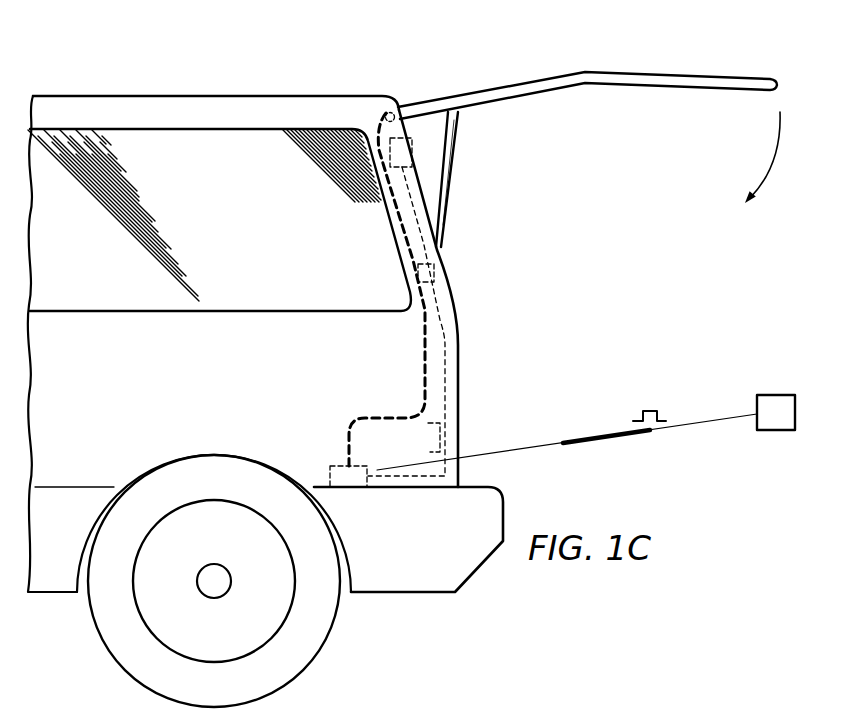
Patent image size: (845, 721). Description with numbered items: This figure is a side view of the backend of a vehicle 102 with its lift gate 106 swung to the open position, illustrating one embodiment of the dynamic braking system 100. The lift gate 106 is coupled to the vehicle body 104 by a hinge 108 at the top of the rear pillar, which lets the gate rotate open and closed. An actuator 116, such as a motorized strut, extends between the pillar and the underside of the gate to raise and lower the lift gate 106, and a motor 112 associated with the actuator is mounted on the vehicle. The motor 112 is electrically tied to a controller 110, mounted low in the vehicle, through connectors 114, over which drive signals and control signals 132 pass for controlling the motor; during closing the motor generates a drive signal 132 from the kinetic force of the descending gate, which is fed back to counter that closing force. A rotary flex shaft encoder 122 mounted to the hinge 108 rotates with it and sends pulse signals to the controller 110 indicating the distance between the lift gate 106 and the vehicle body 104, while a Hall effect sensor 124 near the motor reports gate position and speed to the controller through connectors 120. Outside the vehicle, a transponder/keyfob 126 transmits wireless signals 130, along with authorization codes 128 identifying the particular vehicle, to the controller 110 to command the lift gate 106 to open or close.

The dynamic braking system 100 is at (512, 260).
The vehicle 102 is at (106, 80).
The vehicle body 104 is at (189, 97).
The lift gate 106 is at (683, 91).
The hinge 108 is at (386, 116).
The controller 110 is at (332, 472).
The motor 112 is at (418, 272).
The connectors 114 is at (458, 345).
The actuator 116 is at (447, 183).
The connectors 120 is at (401, 214).
The rotary flex shaft encoder 122 is at (372, 112).
The Hall effect sensor 124 is at (412, 150).
The transponder/keyfob 126 is at (777, 432).
The authorization codes 128 is at (646, 410).
The wireless signals 130 is at (594, 442).
The drive signal 132 is at (428, 437).